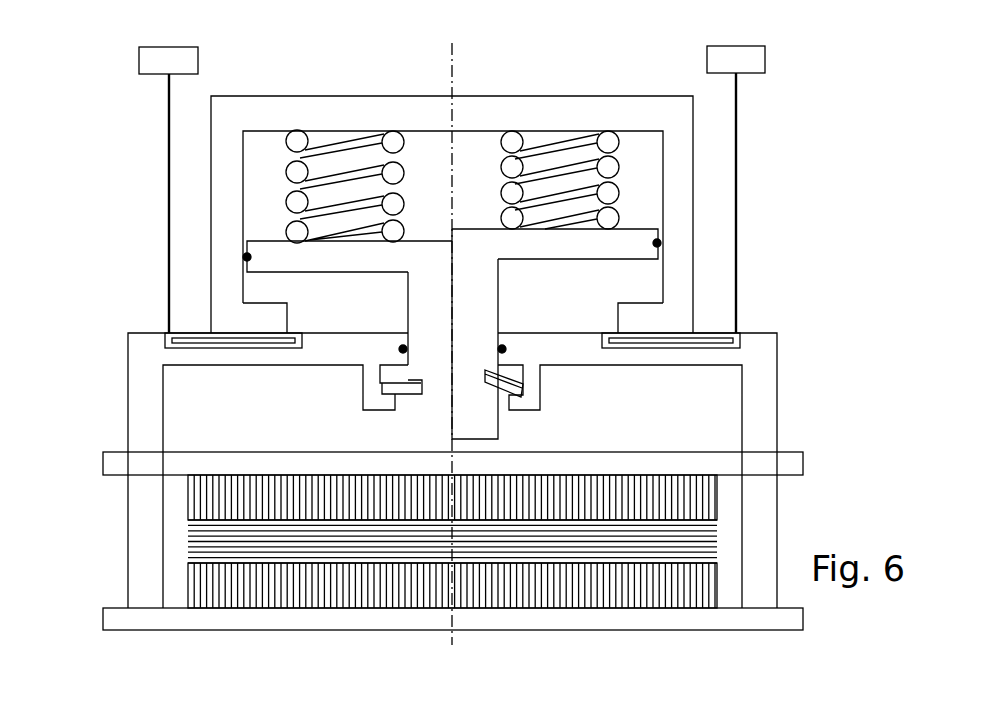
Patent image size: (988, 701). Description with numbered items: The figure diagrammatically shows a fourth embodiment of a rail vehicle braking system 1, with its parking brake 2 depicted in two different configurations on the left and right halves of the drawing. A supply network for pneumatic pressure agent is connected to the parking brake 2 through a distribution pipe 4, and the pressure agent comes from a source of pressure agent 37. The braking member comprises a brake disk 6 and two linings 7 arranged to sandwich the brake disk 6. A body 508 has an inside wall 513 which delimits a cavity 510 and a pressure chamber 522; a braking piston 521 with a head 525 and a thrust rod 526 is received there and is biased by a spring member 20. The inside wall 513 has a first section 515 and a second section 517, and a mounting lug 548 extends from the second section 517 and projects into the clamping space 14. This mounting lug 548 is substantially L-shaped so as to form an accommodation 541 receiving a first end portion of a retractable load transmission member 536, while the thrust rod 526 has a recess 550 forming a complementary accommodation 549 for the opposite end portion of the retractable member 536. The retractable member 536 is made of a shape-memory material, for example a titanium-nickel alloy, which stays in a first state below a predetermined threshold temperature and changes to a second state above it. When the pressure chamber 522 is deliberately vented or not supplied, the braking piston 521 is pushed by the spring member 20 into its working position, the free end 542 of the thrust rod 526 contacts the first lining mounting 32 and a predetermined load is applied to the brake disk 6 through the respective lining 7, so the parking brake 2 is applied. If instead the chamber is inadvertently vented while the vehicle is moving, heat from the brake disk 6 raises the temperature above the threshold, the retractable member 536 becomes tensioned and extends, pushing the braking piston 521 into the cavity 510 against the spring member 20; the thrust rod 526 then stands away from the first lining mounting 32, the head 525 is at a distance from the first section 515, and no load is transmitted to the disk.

The rail vehicle braking system 1 is at (118, 193).
The parking brake 2 is at (141, 313).
The distribution pipe 4 is at (167, 120).
The brake disk 6 is at (205, 543).
The lining 7 is at (205, 497).
The clamping space 14 is at (218, 422).
The spring member 20 is at (348, 157).
The first lining mounting 32 is at (205, 463).
The source of pressure agent 37 is at (139, 58).
The body 508 is at (282, 115).
The cavity 510 is at (257, 185).
The inside wall 513 is at (310, 355).
The first section 515 is at (643, 305).
The second section 517 is at (335, 357).
The braking piston 521 is at (432, 240).
The pressure chamber 522 is at (334, 314).
The head 525 is at (568, 248).
The thrust rod 526 is at (477, 289).
The retractable load transmission member 536 is at (507, 377).
The accommodation 541 is at (383, 395).
The free end 542 is at (474, 441).
The mounting lug 548 is at (372, 383).
The complementary accommodation 549 is at (420, 392).
The recess 550 is at (410, 390).